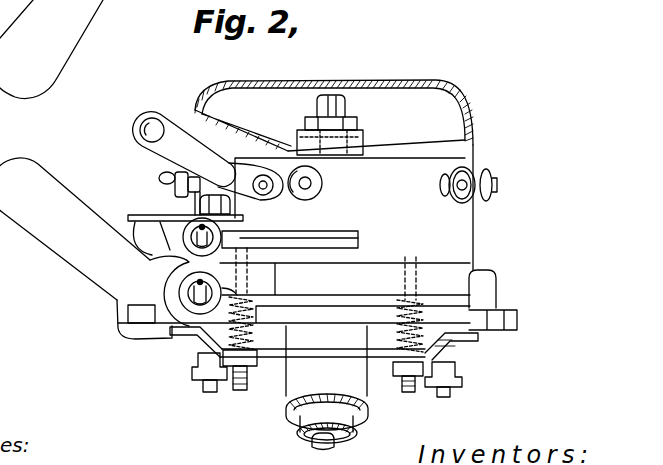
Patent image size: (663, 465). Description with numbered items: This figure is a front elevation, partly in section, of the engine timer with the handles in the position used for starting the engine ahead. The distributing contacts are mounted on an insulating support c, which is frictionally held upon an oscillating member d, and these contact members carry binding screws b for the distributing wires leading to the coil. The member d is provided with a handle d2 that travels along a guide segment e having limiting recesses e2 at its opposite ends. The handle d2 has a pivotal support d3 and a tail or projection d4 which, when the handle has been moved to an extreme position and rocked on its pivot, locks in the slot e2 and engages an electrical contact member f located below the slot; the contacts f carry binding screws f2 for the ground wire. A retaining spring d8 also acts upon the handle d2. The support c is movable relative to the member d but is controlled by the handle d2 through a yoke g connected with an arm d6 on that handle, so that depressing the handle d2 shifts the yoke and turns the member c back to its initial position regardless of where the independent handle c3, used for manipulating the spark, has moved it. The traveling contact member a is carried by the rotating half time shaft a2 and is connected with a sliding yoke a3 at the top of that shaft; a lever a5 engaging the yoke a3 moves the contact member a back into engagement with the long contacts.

The traveling contact member a is at (297, 136).
The rotating half time shaft a2 is at (320, 438).
The sliding yoke a3 is at (363, 141).
The lever a5 is at (347, 114).
The binding screws b is at (478, 172).
The insulating support c is at (365, 226).
The independent handle c3 is at (208, 163).
The oscillating member d is at (345, 279).
The handle d2 is at (94, 248).
The pivotal support d3 is at (198, 300).
The tail or projection d4 is at (197, 337).
The arm d6 is at (165, 228).
The retaining spring d8 is at (157, 214).
The guide segment e is at (294, 320).
The recesses or notches e2 is at (470, 318).
The electrical contact member f is at (200, 346).
The binding screws f2 is at (202, 377).
The yoke g is at (290, 231).